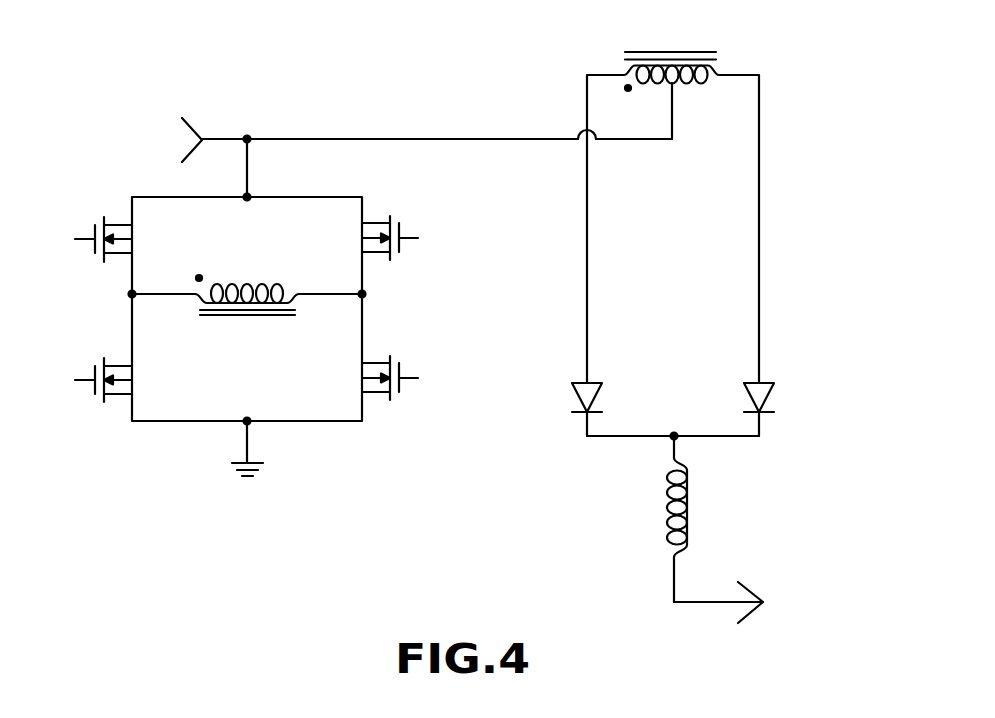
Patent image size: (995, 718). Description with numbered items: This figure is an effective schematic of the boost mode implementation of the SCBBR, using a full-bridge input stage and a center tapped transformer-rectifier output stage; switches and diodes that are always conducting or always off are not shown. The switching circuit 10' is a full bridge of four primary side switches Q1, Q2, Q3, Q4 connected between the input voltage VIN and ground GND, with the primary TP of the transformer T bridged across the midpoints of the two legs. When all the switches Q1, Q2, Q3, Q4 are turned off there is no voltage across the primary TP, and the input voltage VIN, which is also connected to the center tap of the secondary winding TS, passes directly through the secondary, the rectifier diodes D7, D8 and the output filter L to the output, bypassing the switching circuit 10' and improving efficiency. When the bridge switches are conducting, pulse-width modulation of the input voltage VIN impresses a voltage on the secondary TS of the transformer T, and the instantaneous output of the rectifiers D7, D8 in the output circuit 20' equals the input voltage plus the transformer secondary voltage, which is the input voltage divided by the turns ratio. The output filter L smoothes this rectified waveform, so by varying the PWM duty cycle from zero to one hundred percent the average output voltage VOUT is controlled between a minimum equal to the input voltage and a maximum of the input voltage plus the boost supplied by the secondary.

The switching circuit 10' is at (254, 359).
The output circuit 20' is at (661, 345).
The switch Q1 is at (97, 221).
The switch Q2 is at (400, 219).
The switch Q3 is at (97, 359).
The switch Q4 is at (400, 356).
The transformer T is at (458, 185).
The primary TP is at (247, 276).
The secondary winding TS is at (673, 225).
The rectifier diode D7 is at (568, 409).
The rectifier diode D8 is at (781, 409).
The output filter L is at (687, 519).
The input voltage VIN is at (406, 140).
The output voltage VOUT is at (753, 602).
The ground GND is at (268, 456).